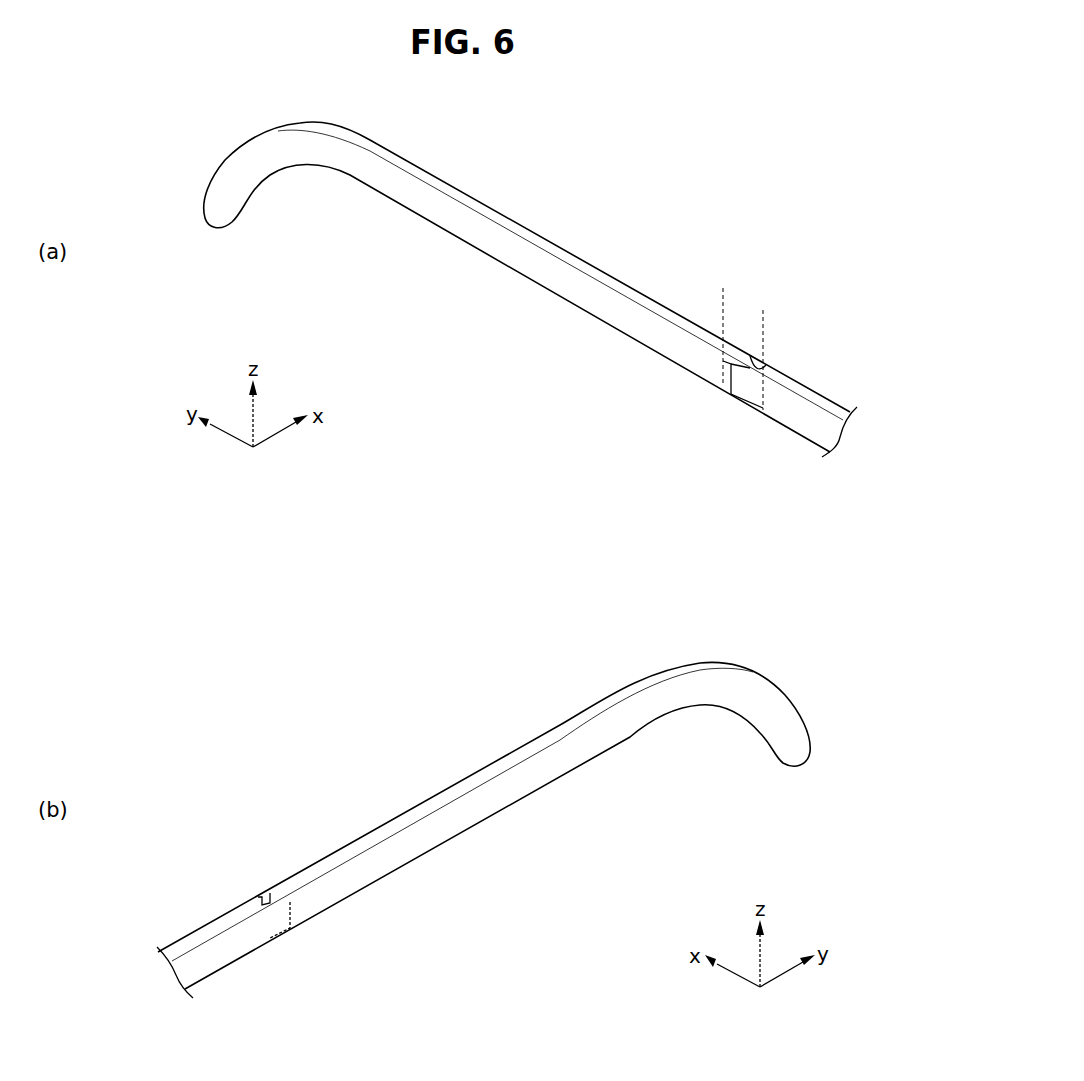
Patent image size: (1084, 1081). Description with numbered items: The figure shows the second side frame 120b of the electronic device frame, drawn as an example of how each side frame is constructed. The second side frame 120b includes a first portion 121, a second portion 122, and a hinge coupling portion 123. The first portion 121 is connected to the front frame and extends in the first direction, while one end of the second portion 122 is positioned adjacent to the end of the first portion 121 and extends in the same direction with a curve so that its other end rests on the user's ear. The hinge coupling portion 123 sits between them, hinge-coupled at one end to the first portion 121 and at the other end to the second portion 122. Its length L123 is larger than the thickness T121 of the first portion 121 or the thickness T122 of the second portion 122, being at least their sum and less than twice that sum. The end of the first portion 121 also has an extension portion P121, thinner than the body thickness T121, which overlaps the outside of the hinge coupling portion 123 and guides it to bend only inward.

The second side frame 120b is at (507, 564).
The first portion 121 is at (780, 410).
The second portion 122 is at (710, 370).
The hinge coupling portion 123 is at (750, 393).
The extension portion P121 is at (276, 936).
The thickness of the first portion T121 is at (797, 423).
The thickness of the second portion T122 is at (567, 292).
The length of the hinge coupling portion L123 is at (763, 322).